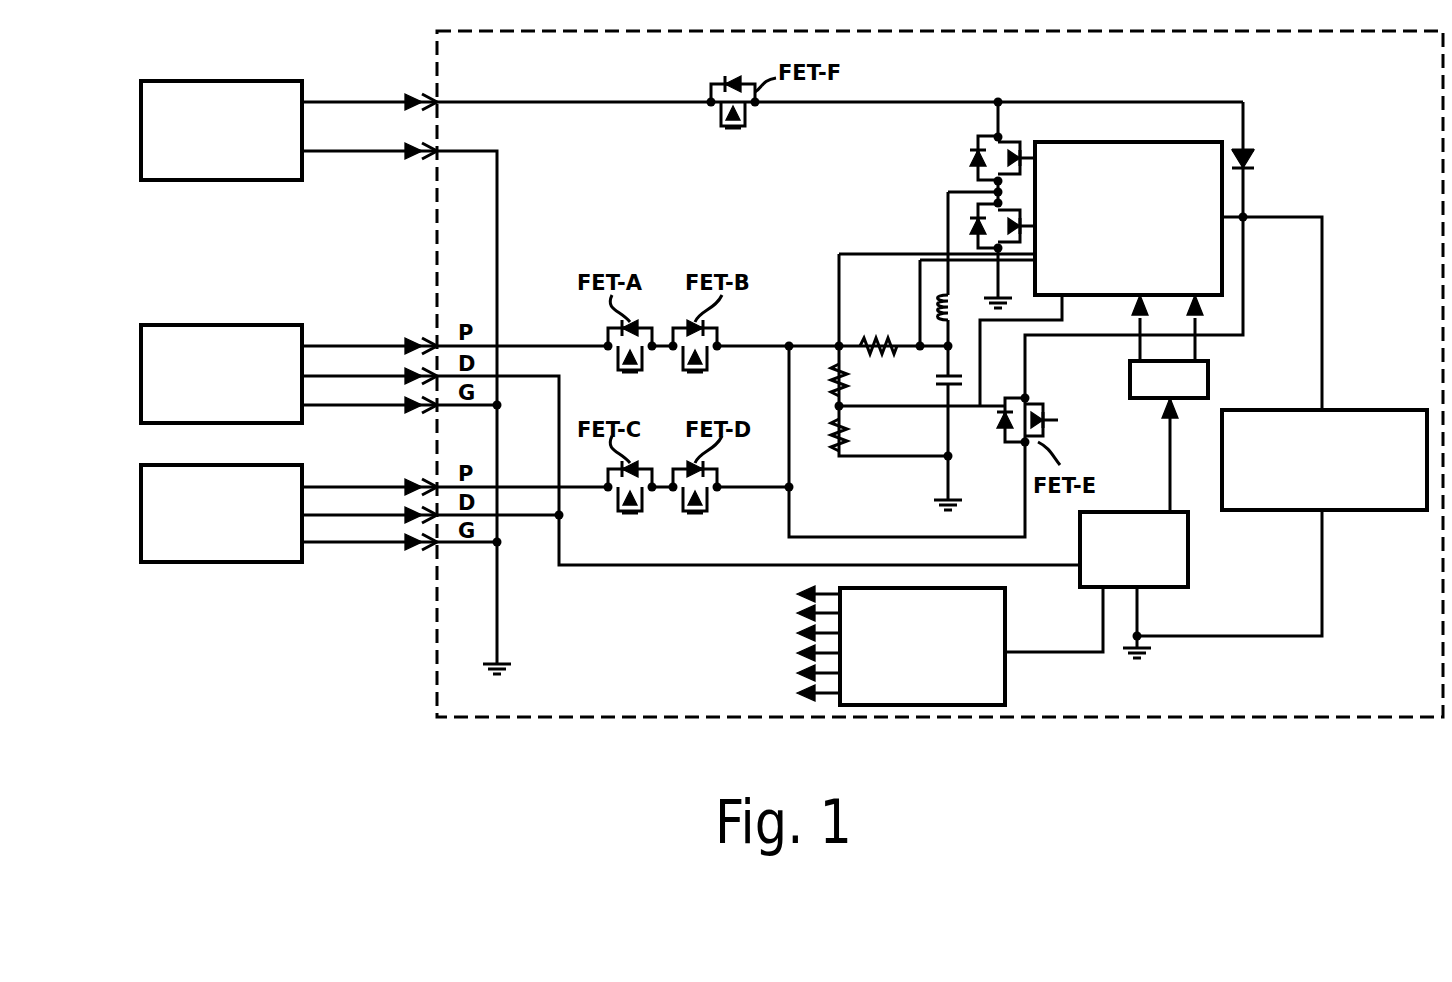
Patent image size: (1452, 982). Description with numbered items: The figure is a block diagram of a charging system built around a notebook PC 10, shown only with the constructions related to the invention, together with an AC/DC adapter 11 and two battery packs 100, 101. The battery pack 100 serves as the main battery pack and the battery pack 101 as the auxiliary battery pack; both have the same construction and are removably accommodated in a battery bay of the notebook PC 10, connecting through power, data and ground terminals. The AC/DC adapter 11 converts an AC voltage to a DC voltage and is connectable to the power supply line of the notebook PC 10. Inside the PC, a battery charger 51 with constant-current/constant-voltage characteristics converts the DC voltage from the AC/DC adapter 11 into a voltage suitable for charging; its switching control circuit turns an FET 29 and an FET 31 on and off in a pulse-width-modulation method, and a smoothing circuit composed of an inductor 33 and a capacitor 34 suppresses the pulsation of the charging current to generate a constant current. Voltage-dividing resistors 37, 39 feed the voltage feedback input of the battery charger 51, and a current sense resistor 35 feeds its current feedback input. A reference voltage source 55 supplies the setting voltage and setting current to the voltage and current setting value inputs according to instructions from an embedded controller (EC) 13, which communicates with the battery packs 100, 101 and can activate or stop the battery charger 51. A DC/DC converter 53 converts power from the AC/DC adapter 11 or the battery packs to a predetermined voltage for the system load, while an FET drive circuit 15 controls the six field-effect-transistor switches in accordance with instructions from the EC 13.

The notebook PC 10 is at (500, 75).
The AC/DC adapter 11 is at (268, 81).
The battery pack 100 is at (292, 308).
The battery pack 101 is at (302, 470).
The FET 29 is at (970, 158).
The FET 31 is at (970, 226).
The inductor 33 is at (955, 318).
The capacitor 34 is at (952, 392).
The current sense resistor 35 is at (878, 340).
The voltage-dividing resistor 37 is at (846, 372).
The voltage-dividing resistor 39 is at (846, 432).
The battery charger 51 is at (1130, 142).
The DC/DC converter 53 is at (1368, 410).
The reference voltage source 55 is at (1208, 372).
The embedded controller (EC) 13 is at (1188, 550).
The FET drive circuit 15 is at (1005, 612).